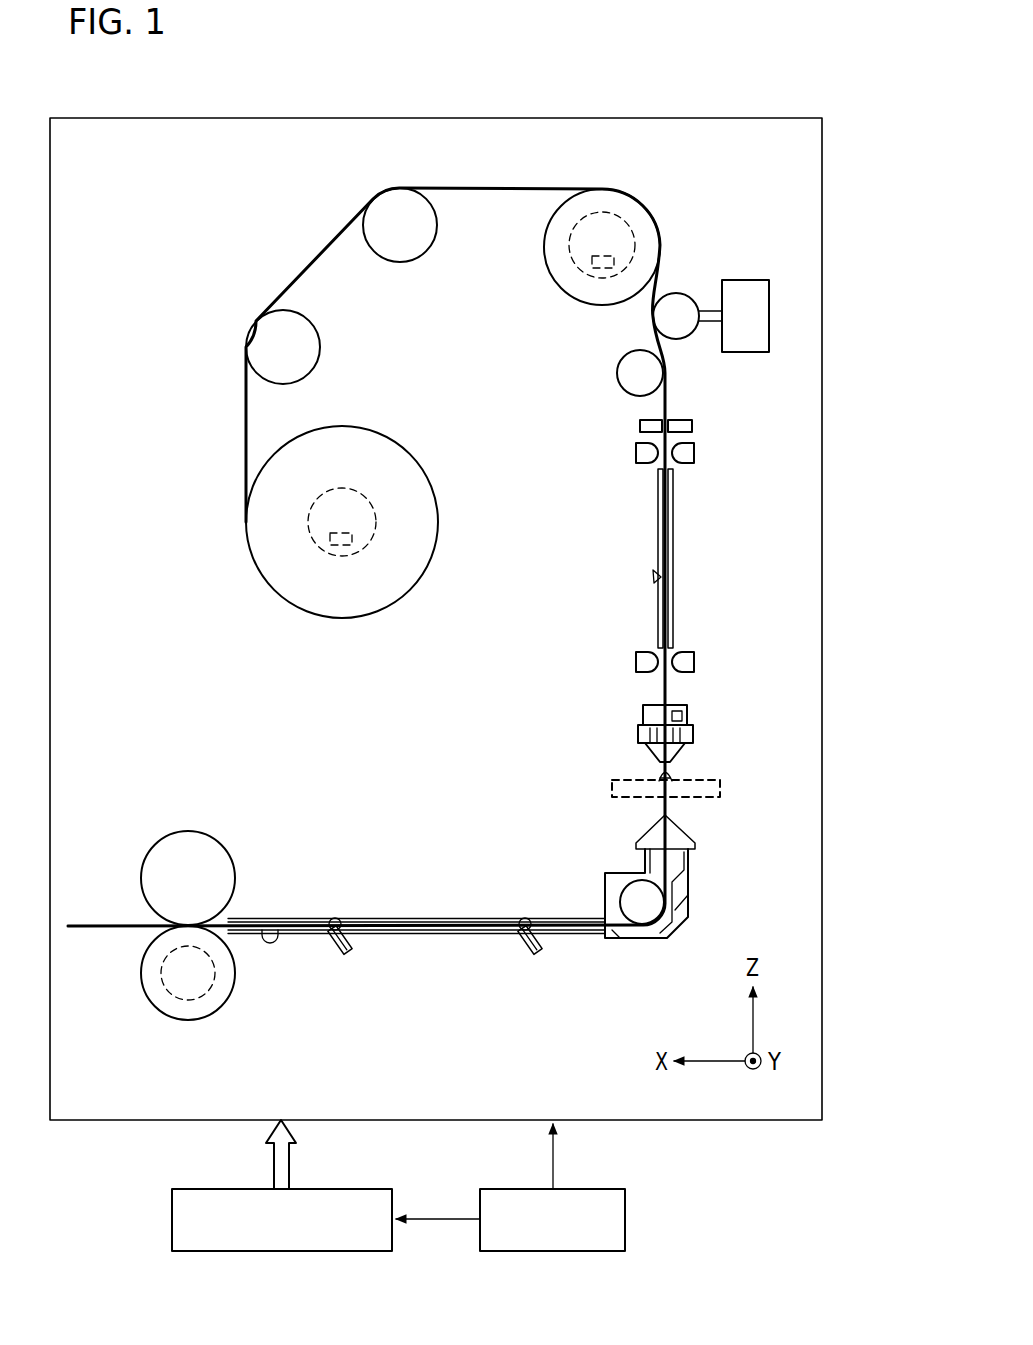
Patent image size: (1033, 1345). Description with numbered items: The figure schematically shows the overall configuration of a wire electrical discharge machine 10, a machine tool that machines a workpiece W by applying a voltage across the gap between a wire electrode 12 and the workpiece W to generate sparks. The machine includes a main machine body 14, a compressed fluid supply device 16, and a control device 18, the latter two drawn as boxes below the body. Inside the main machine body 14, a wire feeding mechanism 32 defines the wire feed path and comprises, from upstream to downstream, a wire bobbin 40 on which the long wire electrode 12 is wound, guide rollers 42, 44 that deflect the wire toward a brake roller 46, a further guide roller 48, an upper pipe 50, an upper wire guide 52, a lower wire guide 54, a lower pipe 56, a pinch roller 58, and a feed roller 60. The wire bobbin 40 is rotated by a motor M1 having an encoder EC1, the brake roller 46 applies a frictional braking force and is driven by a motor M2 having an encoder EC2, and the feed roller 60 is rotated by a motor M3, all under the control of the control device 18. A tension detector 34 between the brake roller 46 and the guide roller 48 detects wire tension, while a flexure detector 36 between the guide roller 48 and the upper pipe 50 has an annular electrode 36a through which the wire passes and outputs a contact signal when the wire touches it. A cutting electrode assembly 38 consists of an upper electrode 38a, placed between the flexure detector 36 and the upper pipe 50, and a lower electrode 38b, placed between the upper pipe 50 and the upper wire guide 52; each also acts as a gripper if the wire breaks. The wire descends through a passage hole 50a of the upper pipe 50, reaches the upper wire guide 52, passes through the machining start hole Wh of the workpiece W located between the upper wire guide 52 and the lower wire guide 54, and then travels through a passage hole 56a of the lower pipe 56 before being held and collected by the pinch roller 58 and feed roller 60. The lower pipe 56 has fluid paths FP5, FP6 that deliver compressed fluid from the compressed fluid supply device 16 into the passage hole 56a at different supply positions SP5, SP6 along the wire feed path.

The wire electrical discharge machine 10 is at (287, 69).
The wire electrode 12 is at (320, 256).
The main machine body 14 is at (510, 118).
The compressed fluid supply device 16 is at (172, 1220).
The control device 18 is at (625, 1220).
The wire feeding mechanism 32 is at (360, 542).
The tension detector 34 is at (748, 278).
The flexure detector 36 is at (661, 408).
The annular electrode 36a is at (638, 426).
The cutting electrode assembly 38 is at (610, 557).
The upper electrode 38a is at (648, 465).
The lower electrode 38b is at (648, 650).
The wire bobbin 40 is at (402, 582).
The guide roller 42 is at (300, 345).
The guide roller 44 is at (400, 240).
The brake roller 46 is at (585, 290).
The guide roller 48 is at (628, 373).
The upper pipe 50 is at (676, 512).
The passage hole 50a is at (663, 578).
The upper wire guide 52 is at (632, 708).
The lower wire guide 54 is at (628, 853).
The lower pipe 56 is at (360, 918).
The passage hole 56a is at (276, 927).
The pinch roller 58 is at (205, 832).
The feed roller 60 is at (185, 1020).
The motor M1 is at (312, 540).
The motor M2 is at (570, 242).
The motor M3 is at (215, 985).
The encoder EC1 is at (340, 548).
The encoder EC2 is at (580, 268).
The workpiece W is at (720, 788).
The machining start hole Wh is at (664, 778).
The supply position SP5 is at (527, 918).
The supply position SP6 is at (335, 918).
The fluid path FP5 is at (540, 952).
The fluid path FP6 is at (350, 952).